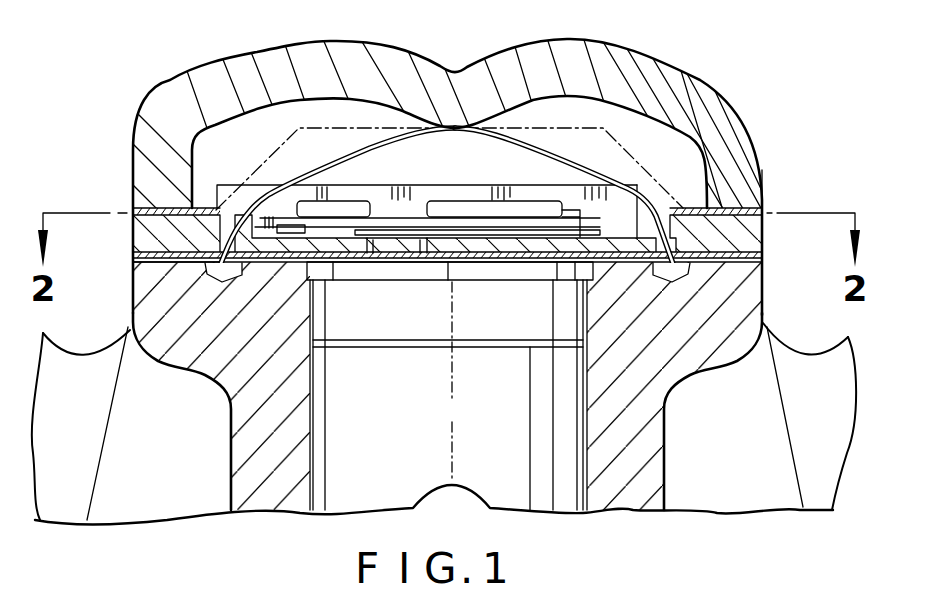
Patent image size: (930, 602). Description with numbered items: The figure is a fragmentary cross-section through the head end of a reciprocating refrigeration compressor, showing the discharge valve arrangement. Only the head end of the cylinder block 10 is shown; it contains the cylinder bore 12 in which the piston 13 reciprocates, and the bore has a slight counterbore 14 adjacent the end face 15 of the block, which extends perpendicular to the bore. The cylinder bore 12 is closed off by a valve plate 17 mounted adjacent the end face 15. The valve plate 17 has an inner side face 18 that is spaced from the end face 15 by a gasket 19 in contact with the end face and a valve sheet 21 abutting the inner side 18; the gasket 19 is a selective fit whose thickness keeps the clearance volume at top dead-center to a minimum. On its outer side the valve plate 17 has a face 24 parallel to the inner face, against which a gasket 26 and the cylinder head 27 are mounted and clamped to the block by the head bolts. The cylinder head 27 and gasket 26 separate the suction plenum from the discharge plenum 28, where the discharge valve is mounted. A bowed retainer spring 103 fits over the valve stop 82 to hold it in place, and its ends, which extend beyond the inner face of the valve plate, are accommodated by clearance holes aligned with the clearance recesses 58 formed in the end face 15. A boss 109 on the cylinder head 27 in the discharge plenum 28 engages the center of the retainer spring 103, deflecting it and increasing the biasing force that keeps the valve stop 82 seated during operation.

The cylinder block 10 is at (637, 417).
The cylinder bore 12 is at (313, 310).
The piston 13 is at (455, 382).
The counterbore 14 is at (313, 270).
The end face 15 is at (763, 263).
The valve plate 17 is at (763, 231).
The inner side face 18 is at (163, 266).
The gasket 19 is at (250, 273).
The valve sheet 21 is at (698, 272).
The outer face 24 is at (692, 208).
The gasket 26 is at (764, 205).
The cylinder head 27 is at (617, 67).
The discharge plenum 28 is at (444, 169).
The clearance recesses 58 is at (207, 276).
The valve stop 82 is at (473, 197).
The retainer spring 103 is at (397, 142).
The boss 109 is at (453, 134).